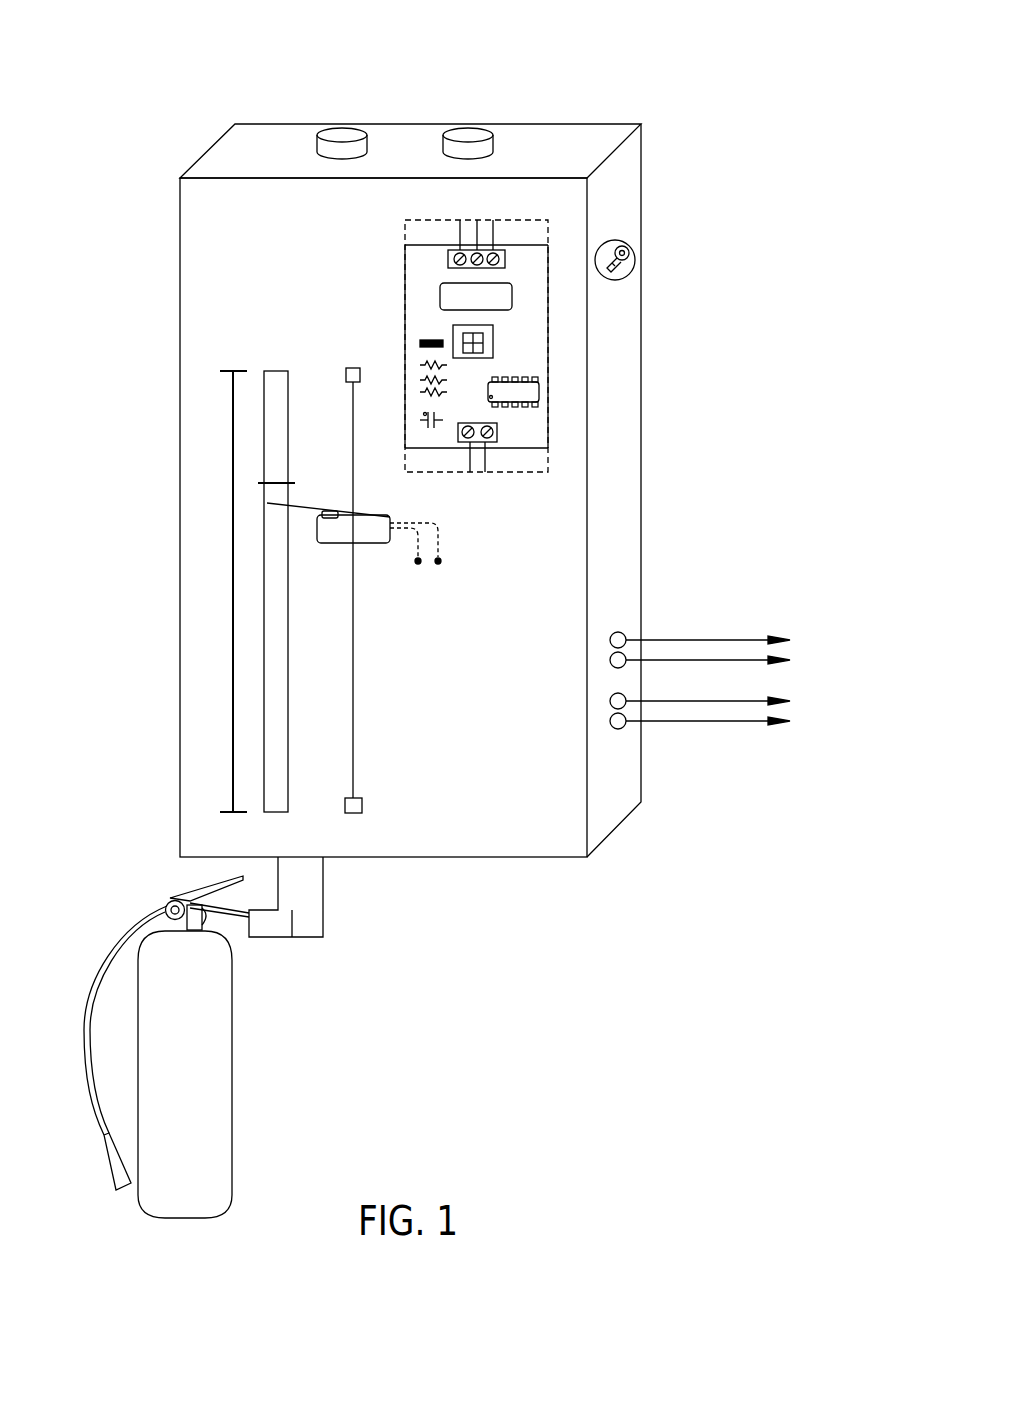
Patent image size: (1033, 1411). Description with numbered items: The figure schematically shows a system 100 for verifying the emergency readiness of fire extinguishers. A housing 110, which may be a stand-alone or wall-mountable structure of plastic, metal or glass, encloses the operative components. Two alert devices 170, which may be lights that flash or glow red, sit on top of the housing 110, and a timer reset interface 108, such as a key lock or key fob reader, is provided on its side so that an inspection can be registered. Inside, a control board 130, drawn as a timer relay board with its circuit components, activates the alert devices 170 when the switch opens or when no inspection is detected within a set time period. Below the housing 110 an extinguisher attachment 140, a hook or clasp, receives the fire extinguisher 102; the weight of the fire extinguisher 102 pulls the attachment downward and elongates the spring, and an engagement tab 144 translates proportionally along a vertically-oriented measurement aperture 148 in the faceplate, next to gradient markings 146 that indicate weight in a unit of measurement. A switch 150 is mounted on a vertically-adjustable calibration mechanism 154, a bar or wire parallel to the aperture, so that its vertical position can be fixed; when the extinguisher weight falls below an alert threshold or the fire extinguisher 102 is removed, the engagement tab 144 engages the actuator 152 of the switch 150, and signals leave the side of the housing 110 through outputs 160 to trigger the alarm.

The system 100 is at (703, 59).
The fire extinguisher 102 is at (232, 1017).
The timer reset interface 108 is at (635, 260).
The housing 110 is at (619, 439).
The control board 130 is at (412, 280).
The extinguisher attachment 140 is at (325, 898).
The engagement tab 144 is at (295, 483).
The gradient markings 146 is at (233, 392).
The vertically-oriented measurement aperture 148 is at (277, 813).
The switch 150 is at (377, 543).
The actuator 152 is at (313, 513).
The calibration mechanism 154 is at (353, 390).
The output signals 160 is at (700, 623).
The alert devices 170 is at (340, 128).